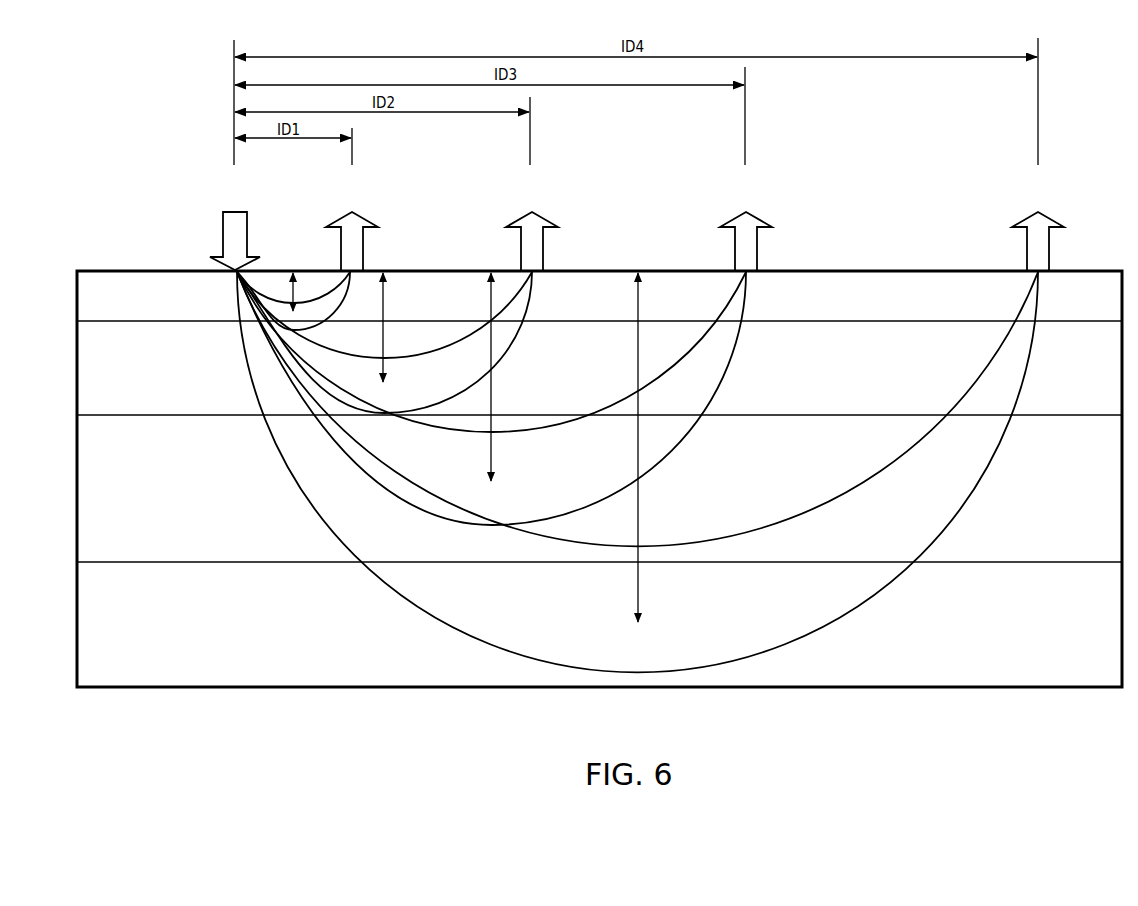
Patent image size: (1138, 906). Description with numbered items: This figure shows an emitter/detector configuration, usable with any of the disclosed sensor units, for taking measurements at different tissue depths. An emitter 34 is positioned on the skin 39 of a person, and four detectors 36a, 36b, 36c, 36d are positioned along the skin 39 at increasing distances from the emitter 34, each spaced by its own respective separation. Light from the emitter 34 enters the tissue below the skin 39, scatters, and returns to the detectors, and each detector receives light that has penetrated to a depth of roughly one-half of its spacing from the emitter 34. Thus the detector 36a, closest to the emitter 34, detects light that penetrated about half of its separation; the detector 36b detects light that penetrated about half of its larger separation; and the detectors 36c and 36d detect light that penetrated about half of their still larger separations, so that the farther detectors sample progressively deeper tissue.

The emitter 34 is at (228, 226).
The detector 36a is at (358, 240).
The detector 36b is at (537, 242).
The detector 36c is at (747, 245).
The detector 36d is at (1042, 245).
The skin 39 is at (883, 287).